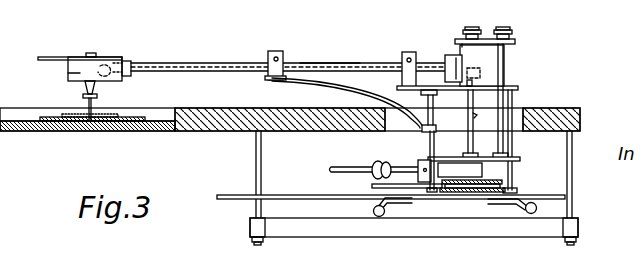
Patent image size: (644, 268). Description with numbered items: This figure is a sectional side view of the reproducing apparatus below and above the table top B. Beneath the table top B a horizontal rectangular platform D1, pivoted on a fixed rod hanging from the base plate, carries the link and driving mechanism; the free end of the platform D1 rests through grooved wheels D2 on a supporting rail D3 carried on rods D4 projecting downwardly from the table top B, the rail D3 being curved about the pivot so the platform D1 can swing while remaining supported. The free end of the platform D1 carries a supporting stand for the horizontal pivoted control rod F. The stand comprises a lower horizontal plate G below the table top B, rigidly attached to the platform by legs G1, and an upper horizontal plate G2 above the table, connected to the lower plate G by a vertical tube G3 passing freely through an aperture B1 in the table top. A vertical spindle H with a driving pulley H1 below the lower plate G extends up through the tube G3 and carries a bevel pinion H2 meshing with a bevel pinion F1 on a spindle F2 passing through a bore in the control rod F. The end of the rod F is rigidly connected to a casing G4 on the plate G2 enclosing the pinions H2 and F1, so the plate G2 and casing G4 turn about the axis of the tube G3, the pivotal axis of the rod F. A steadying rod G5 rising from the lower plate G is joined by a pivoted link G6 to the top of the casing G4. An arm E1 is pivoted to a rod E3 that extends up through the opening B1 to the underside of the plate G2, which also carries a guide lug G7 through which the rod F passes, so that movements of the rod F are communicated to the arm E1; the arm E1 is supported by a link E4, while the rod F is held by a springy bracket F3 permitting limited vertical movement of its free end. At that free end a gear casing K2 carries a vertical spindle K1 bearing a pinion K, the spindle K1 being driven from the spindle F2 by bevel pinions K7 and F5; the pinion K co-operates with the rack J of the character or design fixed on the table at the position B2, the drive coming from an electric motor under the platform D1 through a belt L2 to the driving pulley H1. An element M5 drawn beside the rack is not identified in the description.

The table top B is at (560, 110).
The aperture in the table top B1 is at (573, 131).
The character or design position B2 is at (27, 131).
The pinion K is at (82, 131).
The vertical spindle K1 is at (96, 100).
The gear casing K2 is at (80, 65).
The bevel pinion K7 is at (68, 73).
The control rod F is at (294, 63).
The bevel pinion F1 is at (472, 28).
The spindle F2 is at (322, 63).
The springy bracket F3 is at (358, 86).
The bevel pinion F5 is at (108, 62).
The work piece J is at (102, 131).
The work holder M5 is at (140, 131).
The lower horizontal plate G is at (504, 168).
The legs G1 is at (512, 161).
The upper horizontal plate G2 is at (518, 88).
The vertical tube G3 is at (468, 150).
The gear casing G4 is at (483, 60).
The steadying rod G5 is at (505, 130).
The pivoted link G6 is at (497, 40).
The guide lug G7 is at (407, 52).
The vertical spindle H is at (467, 90).
The driving pulley H1 is at (476, 178).
The bevel pinion H2 is at (478, 75).
The arm E1 is at (352, 167).
The rod E3 is at (420, 162).
The link E4 is at (447, 178).
The horizontal rectangular platform D1 is at (238, 196).
The grooved wheels D2 is at (532, 214).
The supporting rail D3 is at (473, 225).
The rods D4 is at (257, 155).
The belt L2 is at (400, 186).